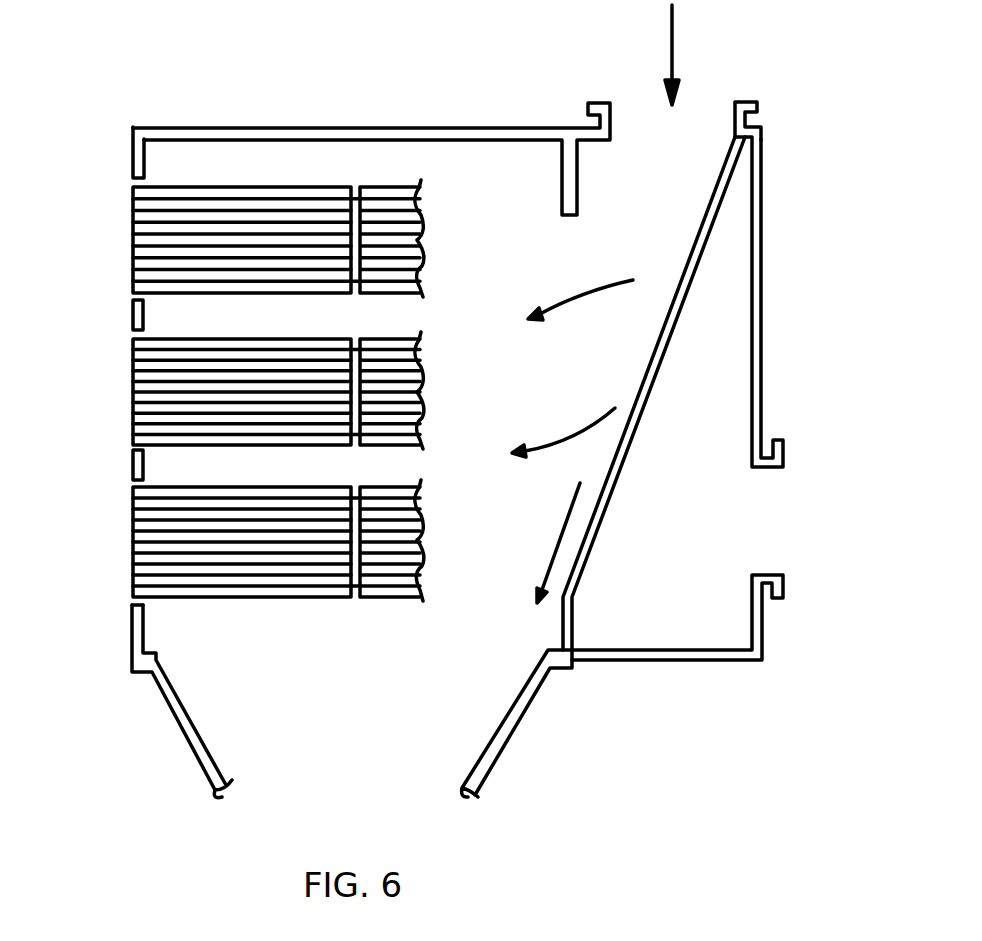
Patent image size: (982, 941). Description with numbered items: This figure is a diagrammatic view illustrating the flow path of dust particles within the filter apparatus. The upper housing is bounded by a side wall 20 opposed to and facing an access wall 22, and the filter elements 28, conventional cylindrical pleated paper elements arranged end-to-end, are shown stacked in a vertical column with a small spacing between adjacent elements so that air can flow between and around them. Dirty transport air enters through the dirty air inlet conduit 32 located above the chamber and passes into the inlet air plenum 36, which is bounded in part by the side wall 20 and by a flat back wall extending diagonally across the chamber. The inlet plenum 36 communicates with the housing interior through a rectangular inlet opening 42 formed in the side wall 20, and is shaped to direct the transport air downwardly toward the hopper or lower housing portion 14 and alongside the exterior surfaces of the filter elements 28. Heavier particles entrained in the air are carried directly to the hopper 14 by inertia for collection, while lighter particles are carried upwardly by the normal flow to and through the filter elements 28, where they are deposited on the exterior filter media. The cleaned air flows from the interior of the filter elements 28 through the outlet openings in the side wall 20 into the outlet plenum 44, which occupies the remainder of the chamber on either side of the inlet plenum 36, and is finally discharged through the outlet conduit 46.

The lower housing portion 14 is at (190, 740).
The side wall 20 is at (562, 173).
The access wall 22 is at (133, 160).
The filter element 28 is at (280, 185).
The dirty air inlet conduit 32 is at (752, 101).
The inlet air plenum 36 is at (656, 302).
The inlet opening 42 is at (577, 392).
The outlet plenum 44 is at (762, 202).
The outlet conduit 46 is at (783, 586).